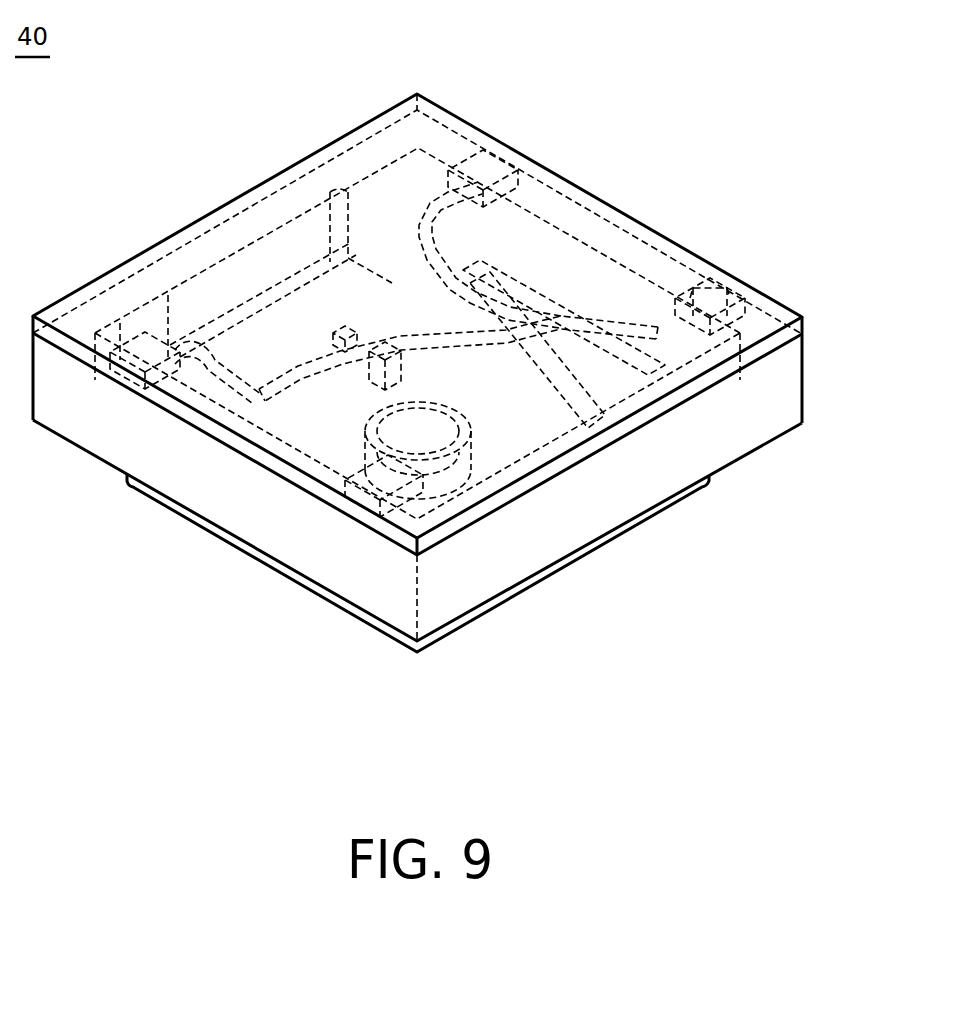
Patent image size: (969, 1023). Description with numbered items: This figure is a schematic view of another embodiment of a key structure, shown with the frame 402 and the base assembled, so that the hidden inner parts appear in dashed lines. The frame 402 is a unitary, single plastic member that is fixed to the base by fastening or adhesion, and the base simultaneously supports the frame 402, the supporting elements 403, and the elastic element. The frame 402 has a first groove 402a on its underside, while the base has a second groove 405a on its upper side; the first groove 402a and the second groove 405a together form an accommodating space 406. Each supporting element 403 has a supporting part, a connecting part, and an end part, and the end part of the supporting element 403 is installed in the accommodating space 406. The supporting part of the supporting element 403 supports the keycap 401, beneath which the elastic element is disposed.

The keycap 401 is at (557, 576).
The frame 402 is at (773, 388).
The first groove 402a is at (705, 300).
The supporting element 403 is at (587, 322).
The second groove 405a is at (683, 298).
The accommodating space 406 is at (774, 265).